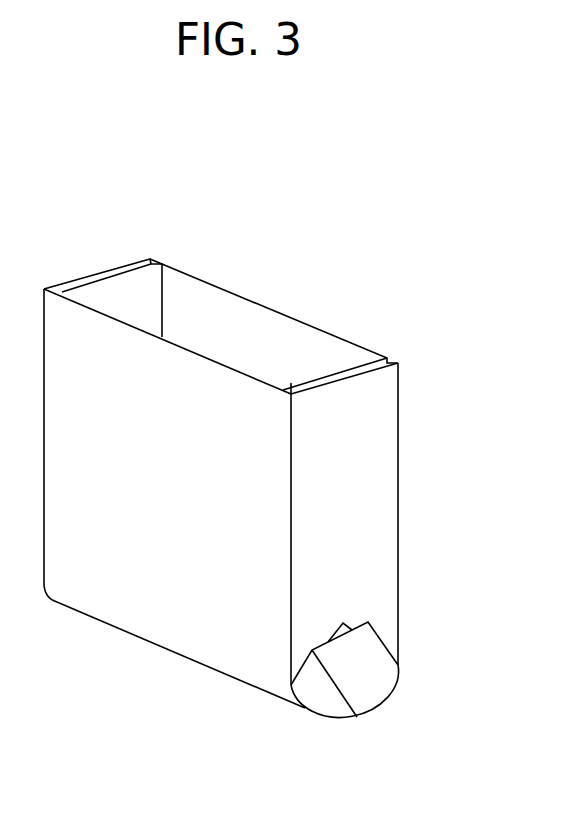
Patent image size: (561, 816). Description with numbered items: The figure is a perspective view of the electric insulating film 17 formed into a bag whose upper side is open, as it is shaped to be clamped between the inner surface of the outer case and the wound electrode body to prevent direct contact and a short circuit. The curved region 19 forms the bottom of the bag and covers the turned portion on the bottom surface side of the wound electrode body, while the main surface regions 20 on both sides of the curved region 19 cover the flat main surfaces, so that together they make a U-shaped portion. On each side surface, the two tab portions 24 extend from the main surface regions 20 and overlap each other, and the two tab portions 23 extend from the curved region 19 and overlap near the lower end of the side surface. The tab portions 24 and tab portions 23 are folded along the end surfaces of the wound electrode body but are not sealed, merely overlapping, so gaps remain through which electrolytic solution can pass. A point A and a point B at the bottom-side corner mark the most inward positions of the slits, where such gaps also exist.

The electric insulating film 17 is at (410, 296).
The curved region 19 is at (132, 635).
The main surface region 20 is at (253, 312).
The tab portion (bottom folded portion) 23 is at (320, 695).
The tab portion (lateral folded portion) 24 is at (365, 466).
The point A is at (400, 663).
The point B is at (356, 718).